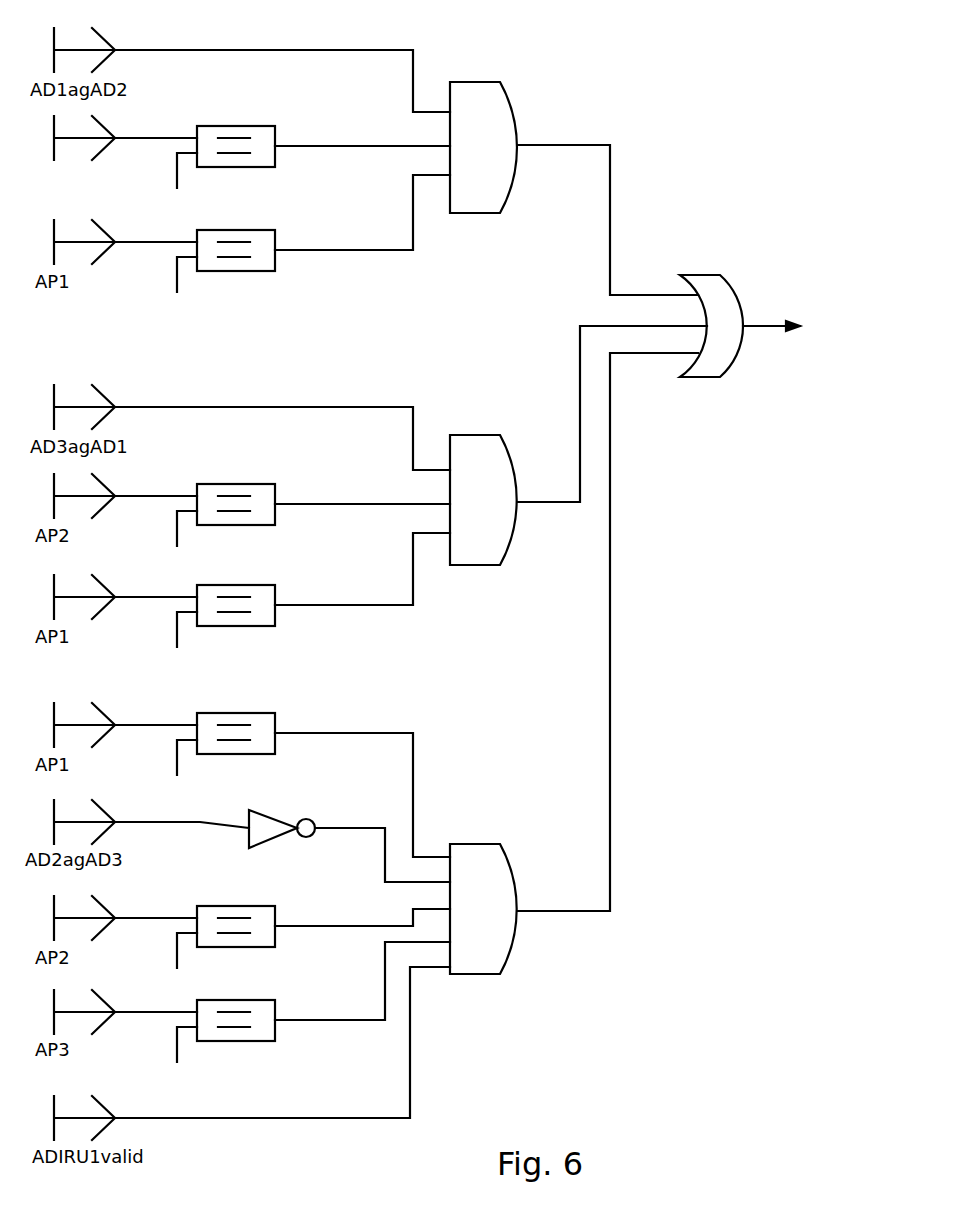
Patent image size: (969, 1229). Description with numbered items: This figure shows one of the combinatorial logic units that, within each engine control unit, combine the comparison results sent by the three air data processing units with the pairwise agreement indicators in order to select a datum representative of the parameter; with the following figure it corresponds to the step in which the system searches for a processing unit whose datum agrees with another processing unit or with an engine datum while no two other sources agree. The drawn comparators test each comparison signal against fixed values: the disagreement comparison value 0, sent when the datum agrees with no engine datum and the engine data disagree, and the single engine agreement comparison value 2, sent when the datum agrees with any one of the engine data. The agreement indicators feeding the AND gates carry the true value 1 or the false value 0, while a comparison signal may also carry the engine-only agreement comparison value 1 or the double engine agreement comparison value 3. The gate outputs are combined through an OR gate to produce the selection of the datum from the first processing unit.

The disagreement comparison value 0 is at (157, 1067).
The single engine agreement comparison value 2 is at (177, 775).
The engine-only agreement comparison value 1 is at (796, 327).
The double engine agreement comparison value 3 is at (116, 152).